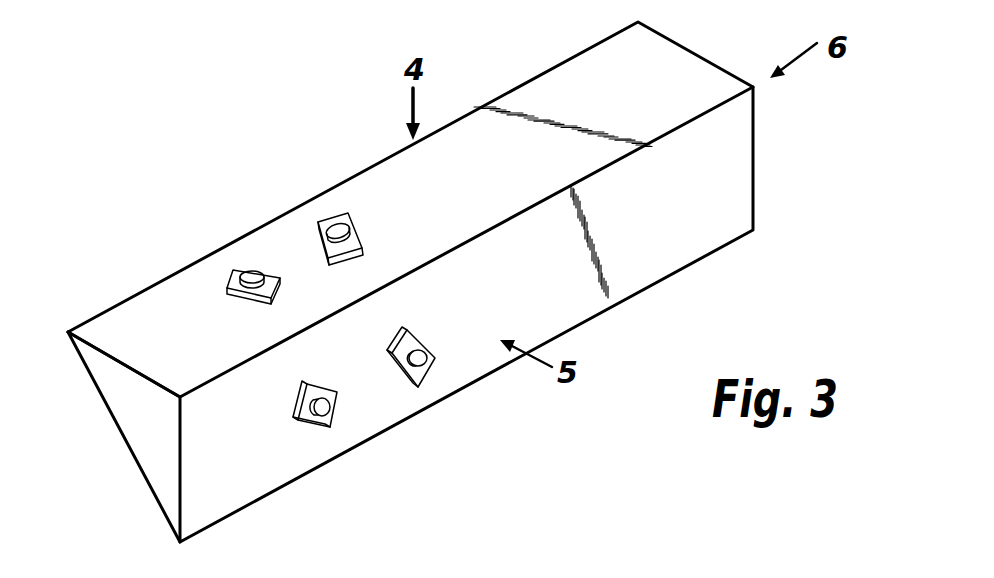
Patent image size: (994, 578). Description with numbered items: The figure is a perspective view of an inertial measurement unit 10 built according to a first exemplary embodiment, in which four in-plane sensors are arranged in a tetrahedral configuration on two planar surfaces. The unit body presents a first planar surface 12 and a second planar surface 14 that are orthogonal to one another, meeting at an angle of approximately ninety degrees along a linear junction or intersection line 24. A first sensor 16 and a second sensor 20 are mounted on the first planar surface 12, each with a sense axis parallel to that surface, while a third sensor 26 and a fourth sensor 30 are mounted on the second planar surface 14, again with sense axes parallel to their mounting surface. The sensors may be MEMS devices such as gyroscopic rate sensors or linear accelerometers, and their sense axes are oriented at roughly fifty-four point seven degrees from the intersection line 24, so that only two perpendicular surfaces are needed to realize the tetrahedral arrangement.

The inertial measurement unit 10 is at (178, 171).
The first planar surface 12 is at (704, 77).
The second planar surface 14 is at (739, 158).
The first sensor 16 is at (233, 276).
The second sensor 20 is at (342, 214).
The intersection line 24 is at (479, 238).
The third sensor 26 is at (303, 409).
The fourth sensor 30 is at (423, 338).